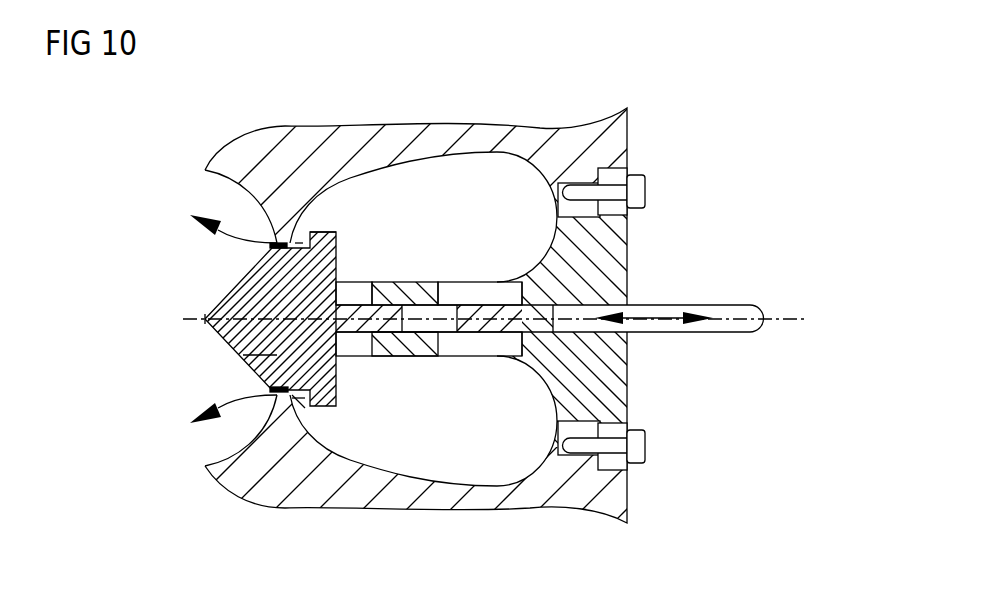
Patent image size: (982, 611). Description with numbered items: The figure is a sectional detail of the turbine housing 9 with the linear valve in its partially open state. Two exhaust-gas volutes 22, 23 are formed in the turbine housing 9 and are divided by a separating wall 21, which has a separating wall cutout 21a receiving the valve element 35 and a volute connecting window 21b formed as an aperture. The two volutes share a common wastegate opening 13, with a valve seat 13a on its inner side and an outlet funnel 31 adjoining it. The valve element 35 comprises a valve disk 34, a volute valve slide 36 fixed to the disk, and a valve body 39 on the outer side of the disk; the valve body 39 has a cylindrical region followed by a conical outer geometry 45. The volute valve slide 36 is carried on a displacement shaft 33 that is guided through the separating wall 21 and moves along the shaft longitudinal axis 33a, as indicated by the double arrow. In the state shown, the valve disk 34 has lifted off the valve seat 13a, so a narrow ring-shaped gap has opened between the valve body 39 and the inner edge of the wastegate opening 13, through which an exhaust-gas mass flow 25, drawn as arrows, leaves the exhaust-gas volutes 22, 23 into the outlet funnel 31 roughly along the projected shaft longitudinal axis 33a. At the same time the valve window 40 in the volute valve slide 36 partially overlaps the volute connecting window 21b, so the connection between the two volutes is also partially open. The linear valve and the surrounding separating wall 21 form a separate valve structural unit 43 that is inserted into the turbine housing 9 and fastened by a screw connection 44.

The turbine housing 9 is at (613, 130).
The wastegate opening 13 is at (278, 395).
The valve seat 13a is at (282, 395).
The separating wall 21 is at (418, 294).
The separating wall cutout 21a is at (358, 296).
The volute connecting window 21b is at (483, 297).
The exhaust-gas volute 22 is at (529, 230).
The exhaust-gas volute 23 is at (529, 433).
The exhaust-gas mass flow 25 is at (231, 241).
The outlet funnel 31 is at (238, 228).
The displacement shaft 33 is at (662, 327).
The shaft longitudinal axis 33a is at (791, 318).
The valve disk 34 is at (323, 233).
The valve element 35 is at (205, 277).
The volute valve slide 36 is at (482, 327).
The valve body 39 is at (258, 356).
The valve window 40 is at (436, 356).
The valve structural unit 43 is at (613, 263).
The screw connection 44 is at (664, 193).
The conical outer geometry 45 is at (207, 320).